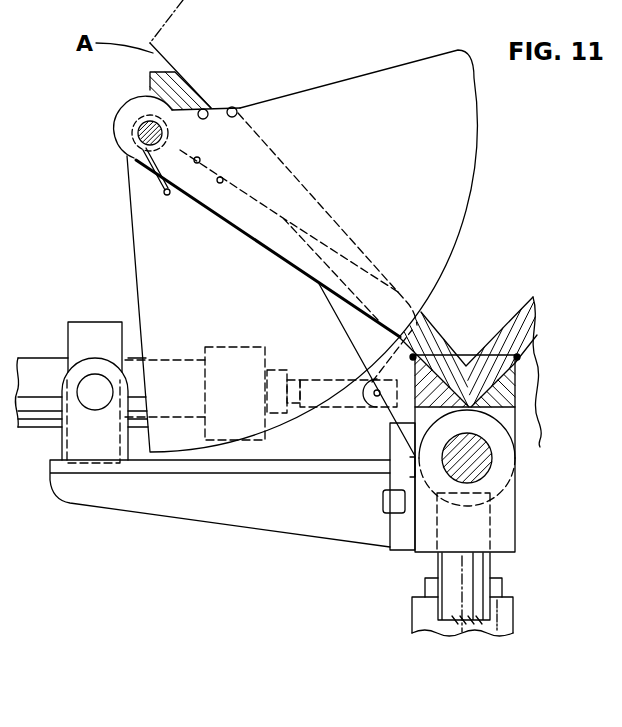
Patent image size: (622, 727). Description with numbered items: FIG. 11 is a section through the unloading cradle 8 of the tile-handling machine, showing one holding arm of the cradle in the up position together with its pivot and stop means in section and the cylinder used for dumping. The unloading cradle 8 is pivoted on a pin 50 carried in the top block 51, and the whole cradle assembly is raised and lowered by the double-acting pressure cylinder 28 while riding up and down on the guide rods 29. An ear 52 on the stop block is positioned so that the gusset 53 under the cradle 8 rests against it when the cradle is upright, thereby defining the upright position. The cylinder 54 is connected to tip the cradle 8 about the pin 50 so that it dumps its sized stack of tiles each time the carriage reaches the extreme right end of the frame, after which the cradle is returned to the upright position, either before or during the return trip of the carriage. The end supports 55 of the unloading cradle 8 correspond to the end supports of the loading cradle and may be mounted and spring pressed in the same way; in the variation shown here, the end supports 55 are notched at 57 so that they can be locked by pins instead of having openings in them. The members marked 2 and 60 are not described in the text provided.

The frame member 2 is at (74, 392).
The unloading cradle 8 is at (535, 330).
The double-acting pressure cylinder 28 is at (427, 623).
The guide rods 29 is at (484, 567).
The pin 50 is at (483, 466).
The top block 51 is at (507, 512).
The ear 52 is at (390, 477).
The gusset 53 is at (376, 398).
The cylinder 54 is at (66, 356).
The end supports 55 is at (136, 265).
The notches 57 is at (232, 108).
The base plate 60 is at (195, 503).